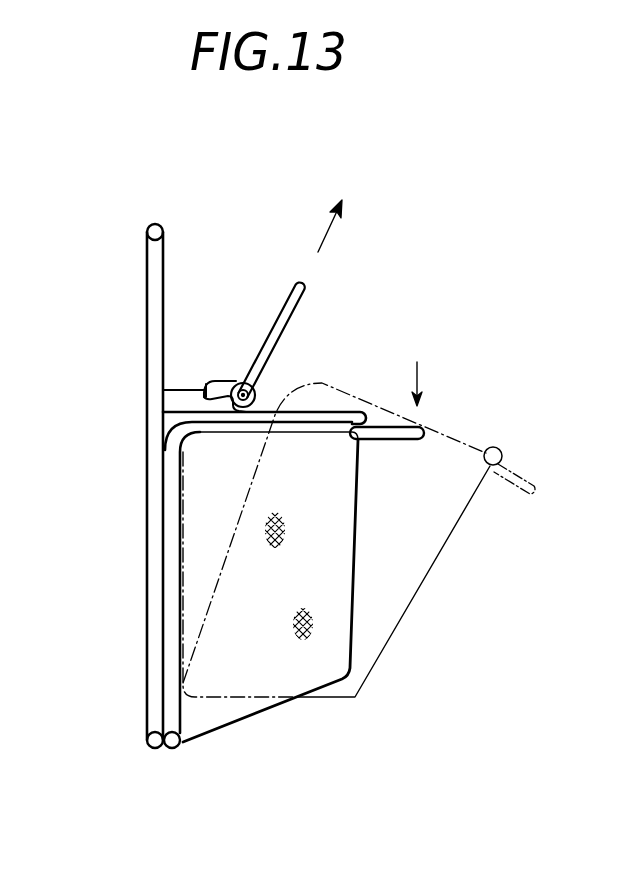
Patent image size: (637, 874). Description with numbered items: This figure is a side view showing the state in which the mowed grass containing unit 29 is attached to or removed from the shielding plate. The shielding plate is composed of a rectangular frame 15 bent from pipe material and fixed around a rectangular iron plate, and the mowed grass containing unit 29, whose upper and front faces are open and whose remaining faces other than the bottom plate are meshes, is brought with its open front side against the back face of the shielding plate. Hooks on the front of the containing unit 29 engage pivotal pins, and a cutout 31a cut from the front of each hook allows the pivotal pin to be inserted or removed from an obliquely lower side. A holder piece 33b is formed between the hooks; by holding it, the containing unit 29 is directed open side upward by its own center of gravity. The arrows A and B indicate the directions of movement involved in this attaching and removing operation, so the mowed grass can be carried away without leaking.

The rectangular frame 15 is at (147, 462).
The mowed grass containing unit 29 is at (365, 567).
The cutout 31a is at (205, 392).
The holder piece 33b is at (278, 348).
The direction of lever movement A is at (297, 305).
The direction of panel movement B is at (395, 440).